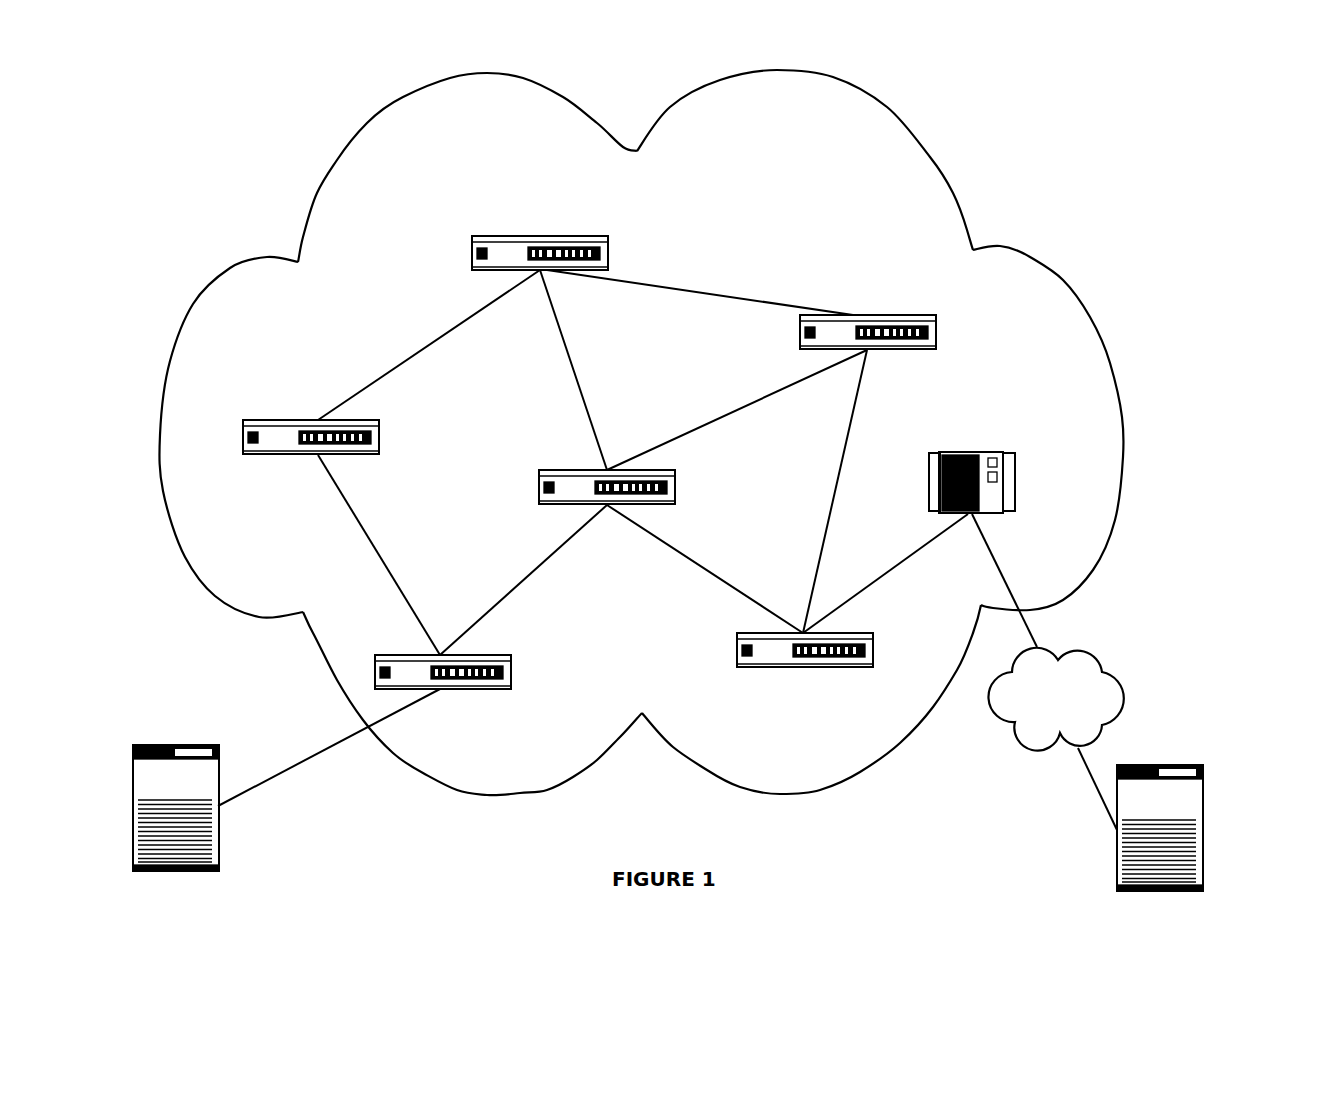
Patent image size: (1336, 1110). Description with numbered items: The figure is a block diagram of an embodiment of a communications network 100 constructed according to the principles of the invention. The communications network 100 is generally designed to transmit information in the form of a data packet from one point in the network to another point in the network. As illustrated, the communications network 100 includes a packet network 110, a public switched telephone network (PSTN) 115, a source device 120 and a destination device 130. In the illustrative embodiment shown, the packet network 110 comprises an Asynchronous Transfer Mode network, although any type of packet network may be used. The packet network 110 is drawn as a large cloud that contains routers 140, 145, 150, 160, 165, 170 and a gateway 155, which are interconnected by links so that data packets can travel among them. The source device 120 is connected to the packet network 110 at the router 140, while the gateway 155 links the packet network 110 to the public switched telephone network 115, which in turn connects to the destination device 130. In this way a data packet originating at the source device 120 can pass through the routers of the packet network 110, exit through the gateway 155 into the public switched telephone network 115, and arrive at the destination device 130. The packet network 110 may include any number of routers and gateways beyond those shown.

The communications network 100 is at (1068, 66).
The packet network 110 is at (800, 70).
The public switched telephone network 115 is at (1088, 647).
The source device 120 is at (211, 745).
The destination device 130 is at (1200, 765).
The router 140 is at (494, 655).
The router 145 is at (662, 470).
The router 150 is at (860, 633).
The gateway 155 is at (1003, 452).
The router 160 is at (364, 420).
The router 165 is at (594, 236).
The router 170 is at (922, 315).